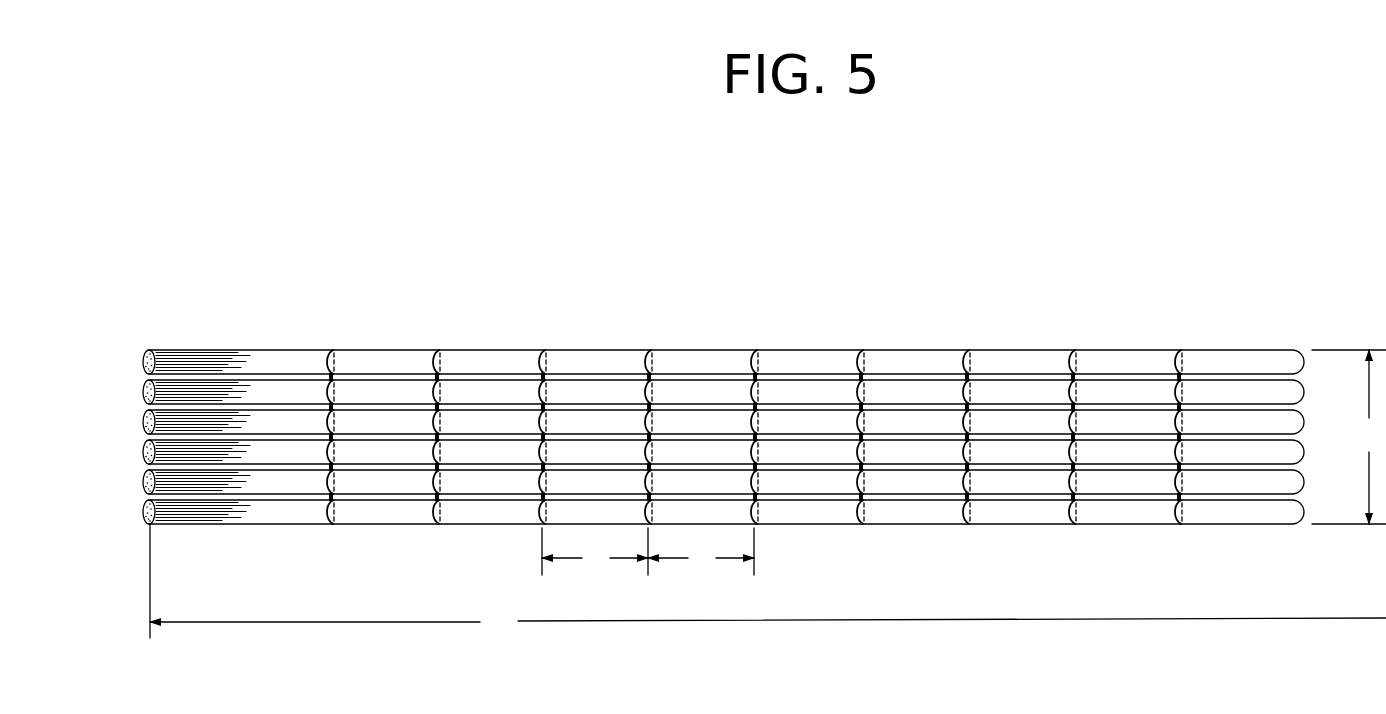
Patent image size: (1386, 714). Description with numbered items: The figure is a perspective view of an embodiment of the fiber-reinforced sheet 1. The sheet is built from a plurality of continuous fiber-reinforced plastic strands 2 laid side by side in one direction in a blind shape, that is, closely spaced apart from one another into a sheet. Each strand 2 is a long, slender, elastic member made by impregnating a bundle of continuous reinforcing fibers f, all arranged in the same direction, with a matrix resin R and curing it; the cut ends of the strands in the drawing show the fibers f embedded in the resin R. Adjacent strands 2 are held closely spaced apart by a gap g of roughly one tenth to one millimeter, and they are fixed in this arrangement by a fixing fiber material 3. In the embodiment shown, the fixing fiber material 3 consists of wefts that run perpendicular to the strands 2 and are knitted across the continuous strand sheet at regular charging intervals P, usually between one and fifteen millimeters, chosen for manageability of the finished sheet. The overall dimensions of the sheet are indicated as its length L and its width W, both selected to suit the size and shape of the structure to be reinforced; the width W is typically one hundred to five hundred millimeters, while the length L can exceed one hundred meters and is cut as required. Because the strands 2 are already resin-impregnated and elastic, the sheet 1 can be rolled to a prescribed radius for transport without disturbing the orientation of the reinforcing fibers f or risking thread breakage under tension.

The fiber-reinforced sheet 1 is at (908, 276).
The fiber-reinforced plastic strand 2 is at (383, 362).
The fixing fiber material 3 is at (641, 362).
The gap g is at (1010, 375).
The reinforcing fibers f is at (145, 362).
The matrix resin R is at (145, 368).
The width W is at (1349, 437).
The length L is at (768, 581).
The charging interval P is at (648, 551).